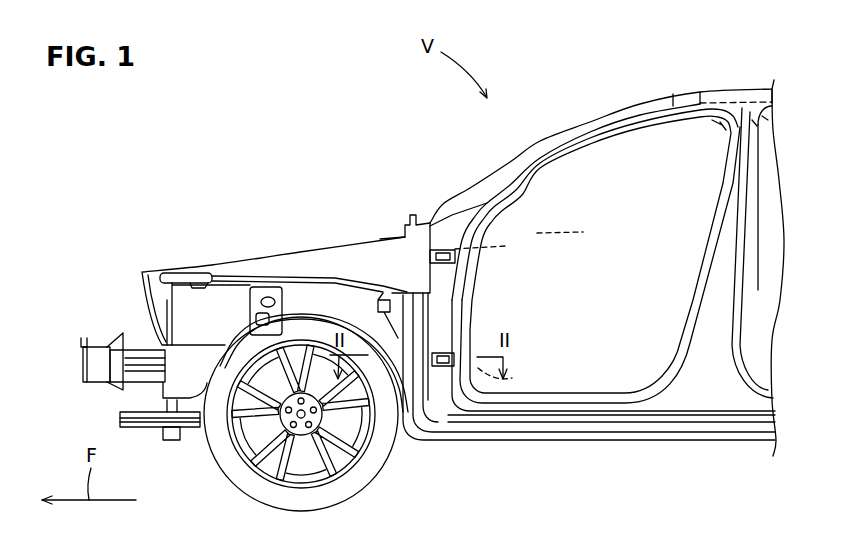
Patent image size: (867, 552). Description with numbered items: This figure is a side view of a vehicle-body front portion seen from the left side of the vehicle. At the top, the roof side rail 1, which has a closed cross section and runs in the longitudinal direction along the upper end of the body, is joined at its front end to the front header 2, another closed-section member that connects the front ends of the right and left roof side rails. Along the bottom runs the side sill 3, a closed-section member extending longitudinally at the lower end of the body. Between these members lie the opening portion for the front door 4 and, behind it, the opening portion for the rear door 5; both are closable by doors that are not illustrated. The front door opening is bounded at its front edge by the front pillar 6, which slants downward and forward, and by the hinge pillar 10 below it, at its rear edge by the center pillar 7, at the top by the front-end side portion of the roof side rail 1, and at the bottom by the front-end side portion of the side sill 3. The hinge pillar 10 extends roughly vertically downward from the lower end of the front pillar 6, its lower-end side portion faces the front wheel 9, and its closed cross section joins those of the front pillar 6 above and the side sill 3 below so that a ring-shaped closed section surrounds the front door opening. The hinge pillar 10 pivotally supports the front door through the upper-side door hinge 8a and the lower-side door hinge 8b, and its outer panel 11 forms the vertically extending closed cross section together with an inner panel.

The roof side rail 1 is at (735, 102).
The front header 2 is at (686, 93).
The side sill 3 is at (660, 430).
The opening portion for front door 4 is at (637, 280).
The opening portion for rear door 5 is at (775, 280).
The front pillar 6 is at (582, 140).
The center pillar 7 is at (722, 188).
The upper-side door hinge 8a is at (506, 247).
The lower-side door hinge 8b is at (484, 372).
The front wheel 9 is at (372, 488).
The hinge pillar 10 is at (487, 318).
The outer panel 11 is at (460, 300).